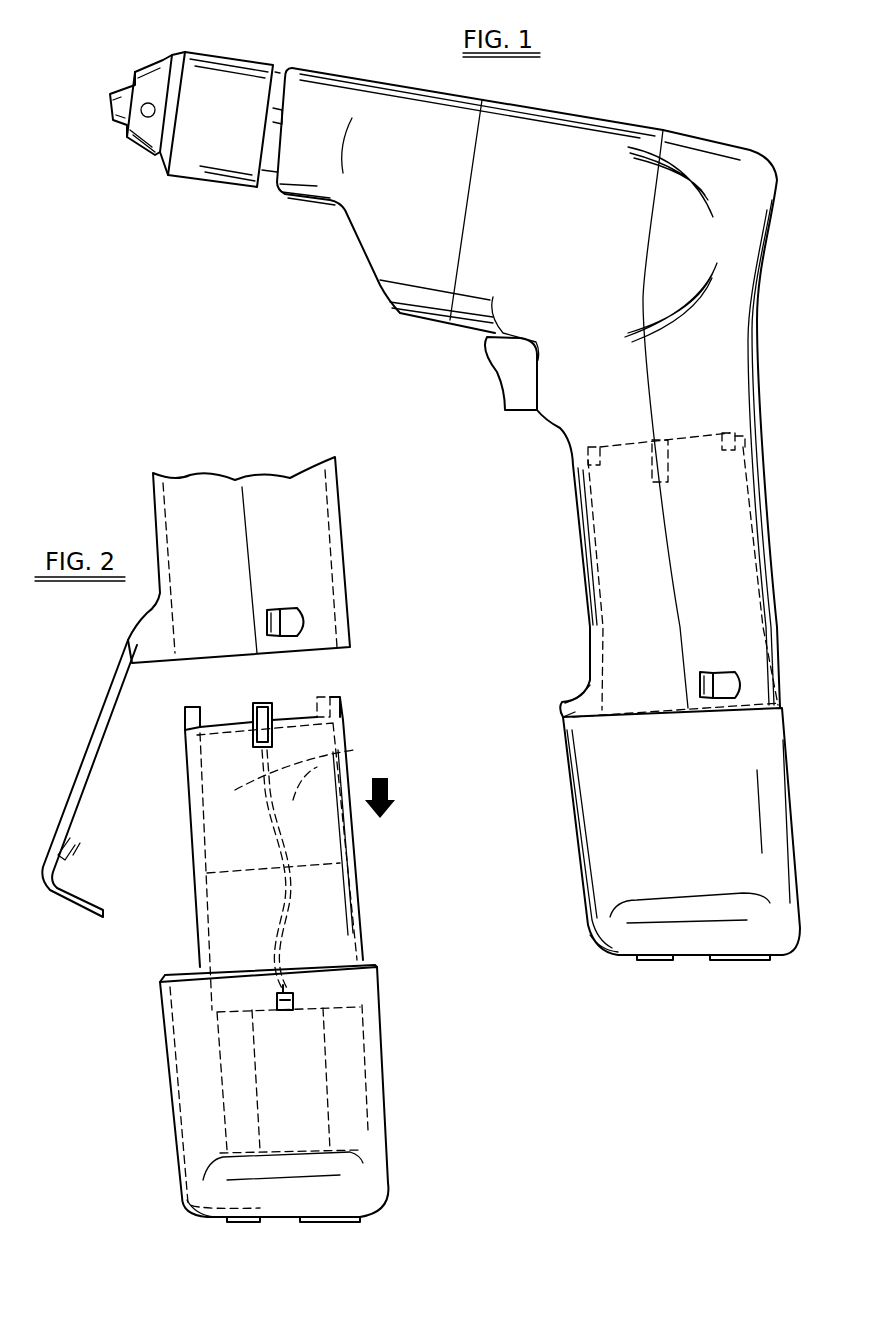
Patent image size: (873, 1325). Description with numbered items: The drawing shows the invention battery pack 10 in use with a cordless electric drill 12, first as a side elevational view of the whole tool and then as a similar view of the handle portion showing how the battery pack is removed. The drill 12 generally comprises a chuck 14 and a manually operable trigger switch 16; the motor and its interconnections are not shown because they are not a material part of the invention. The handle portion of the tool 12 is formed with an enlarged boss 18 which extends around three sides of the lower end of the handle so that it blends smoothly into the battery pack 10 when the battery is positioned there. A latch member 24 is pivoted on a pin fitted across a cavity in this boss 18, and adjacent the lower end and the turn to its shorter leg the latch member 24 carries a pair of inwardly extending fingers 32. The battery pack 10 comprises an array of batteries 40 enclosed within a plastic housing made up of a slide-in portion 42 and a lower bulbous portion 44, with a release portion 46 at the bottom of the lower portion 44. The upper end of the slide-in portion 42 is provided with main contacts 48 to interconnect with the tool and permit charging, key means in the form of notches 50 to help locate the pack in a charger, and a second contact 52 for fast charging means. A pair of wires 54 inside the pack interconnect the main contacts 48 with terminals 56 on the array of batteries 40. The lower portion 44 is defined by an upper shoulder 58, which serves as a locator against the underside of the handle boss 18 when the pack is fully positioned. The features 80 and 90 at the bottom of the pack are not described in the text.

In FIG. 2, the battery pack 10 is at (375, 930).
In FIG. 1, the drill 12 is at (557, 435).
In FIG. 1, the chuck 14 is at (207, 190).
In FIG. 1, the trigger switch 16 is at (497, 372).
In FIG. 1, the enlarged boss 18 is at (563, 684).
In FIG. 2, the enlarged boss 18 is at (125, 628).
In FIG. 1, the latch member 24 is at (582, 877).
In FIG. 2, the latch member 24 is at (77, 755).
In FIG. 2, the fingers 32 is at (80, 843).
In FIG. 2, the batteries 40 is at (355, 760).
In FIG. 1, the slide-in portion 42 is at (590, 572).
In FIG. 2, the slide-in portion 42 is at (187, 778).
In FIG. 1, the lower bulbous portion 44 is at (793, 840).
In FIG. 2, the lower bulbous portion 44 is at (165, 1095).
In FIG. 1, the release portion 46 is at (593, 950).
In FIG. 2, the release portion 46 is at (183, 1212).
In FIG. 1, the main contacts 48 is at (670, 465).
In FIG. 2, the main contacts 48 is at (262, 717).
In FIG. 1, the notches 50 is at (590, 480).
In FIG. 2, the notches 50 is at (192, 712).
In FIG. 1, the second contact 52 is at (745, 440).
In FIG. 2, the second contact 52 is at (345, 705).
In FIG. 2, the wires 54 is at (280, 835).
In FIG. 2, the terminals 56 is at (290, 1000).
In FIG. 1, the upper shoulder 58 is at (575, 715).
In FIG. 2, the upper shoulder 58 is at (173, 973).
In FIG. 1, the bottom tab 80 is at (652, 962).
In FIG. 2, the bottom tab 80 is at (233, 1220).
In FIG. 1, the bottom tab 90 is at (755, 962).
In FIG. 2, the bottom tab 90 is at (353, 1220).